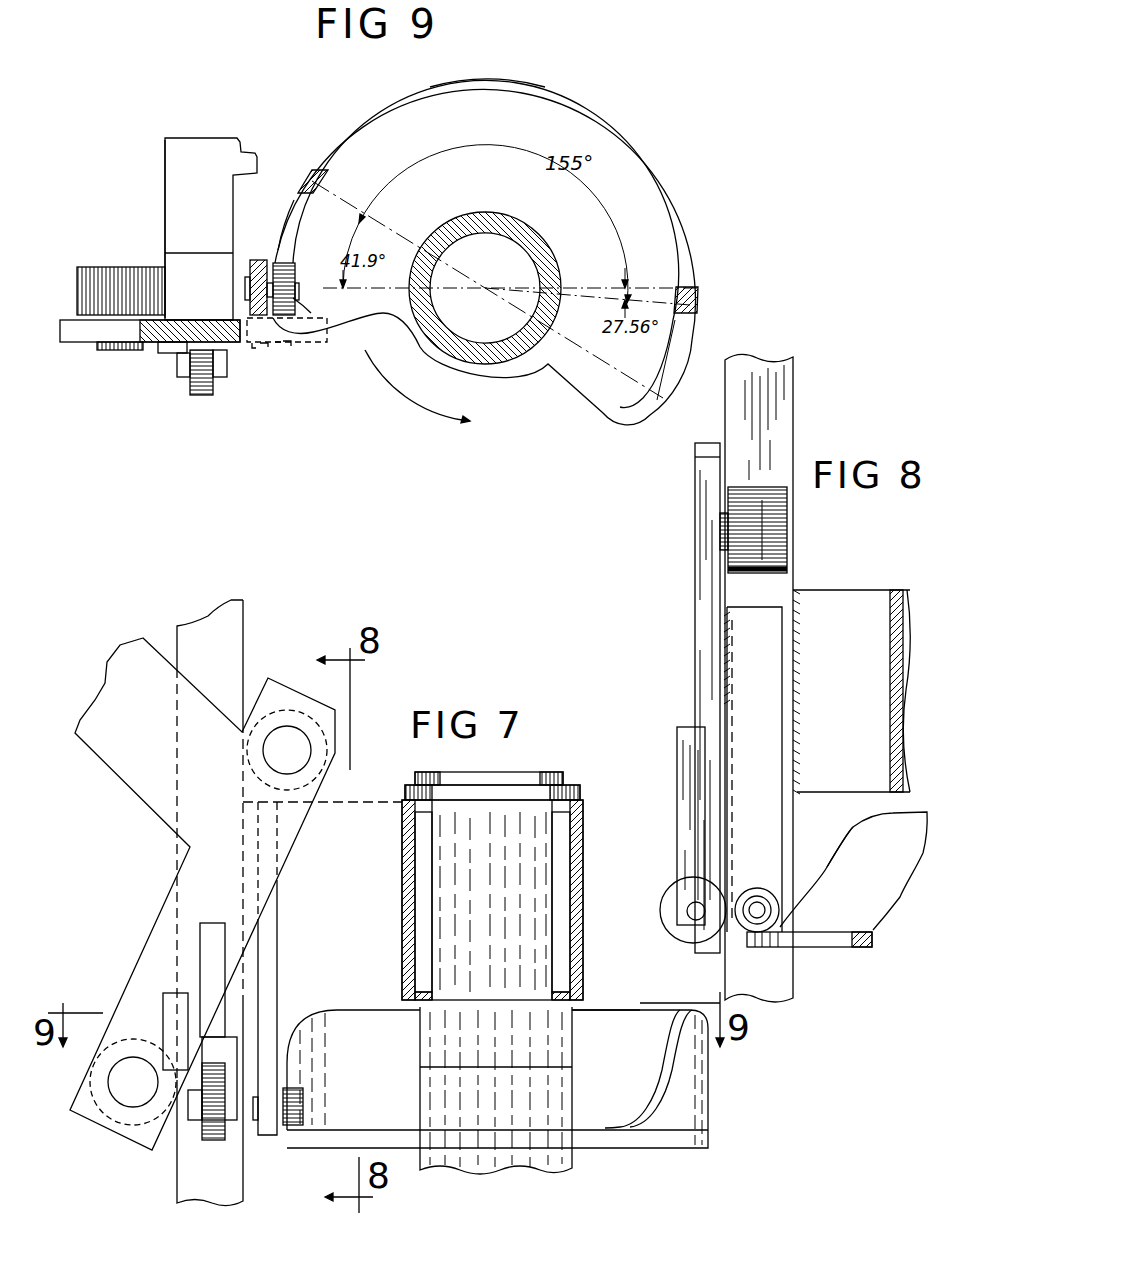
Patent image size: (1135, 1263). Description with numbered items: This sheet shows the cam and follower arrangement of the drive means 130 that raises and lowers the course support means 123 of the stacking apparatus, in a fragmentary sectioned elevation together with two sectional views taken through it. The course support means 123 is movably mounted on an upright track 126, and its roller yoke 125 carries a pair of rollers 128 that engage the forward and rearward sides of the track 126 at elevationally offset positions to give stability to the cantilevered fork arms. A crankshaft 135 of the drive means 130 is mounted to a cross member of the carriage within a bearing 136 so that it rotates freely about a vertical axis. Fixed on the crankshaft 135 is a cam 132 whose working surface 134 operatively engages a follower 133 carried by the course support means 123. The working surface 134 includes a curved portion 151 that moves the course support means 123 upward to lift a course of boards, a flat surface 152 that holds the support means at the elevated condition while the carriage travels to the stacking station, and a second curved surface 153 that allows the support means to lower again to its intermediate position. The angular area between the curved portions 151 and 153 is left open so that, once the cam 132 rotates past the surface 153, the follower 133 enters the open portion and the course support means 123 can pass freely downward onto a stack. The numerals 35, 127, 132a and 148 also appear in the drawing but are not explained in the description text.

In FIG. 9, the hub 35 is at (516, 346).
In FIG. 9, the course support means 123 is at (158, 202).
In FIG. 8, the course support means 123 is at (688, 528).
In FIG. 7, the course support means 123 is at (119, 787).
In FIG. 9, the roller yoke 125 is at (182, 330).
In FIG. 7, the roller yoke 125 is at (176, 904).
In FIG. 9, the upright track 126 is at (202, 270).
In FIG. 8, the upright track 126 is at (775, 430).
In FIG. 7, the upright track 126 is at (216, 644).
In FIG. 8, the housing sleeve 127 is at (890, 672).
In FIG. 7, the housing sleeve 127 is at (583, 848).
In FIG. 9, the roller 128 is at (110, 277).
In FIG. 8, the roller 128 is at (776, 528).
In FIG. 7, the roller 128 is at (328, 784).
In FIG. 9, the drive means 130 is at (690, 211).
In FIG. 7, the drive means 130 is at (715, 1130).
In FIG. 9, the cam 132 is at (589, 409).
In FIG. 7, the cam 132 is at (716, 1061).
In FIG. 8, the cam lobe 132a is at (886, 814).
In FIG. 9, the follower 133 is at (287, 278).
In FIG. 8, the follower 133 is at (779, 906).
In FIG. 7, the follower 133 is at (280, 1152).
In FIG. 9, the working surface 134 is at (607, 128).
In FIG. 8, the working surface 134 is at (864, 831).
In FIG. 7, the working surface 134 is at (618, 1010).
In FIG. 7, the crankshaft 135 is at (455, 912).
In FIG. 7, the bearing 136 is at (574, 788).
In FIG. 9, the lever plate 148 is at (248, 290).
In FIG. 8, the lever plate 148 is at (760, 768).
In FIG. 7, the lever plate 148 is at (265, 980).
In FIG. 9, the curved cam portion 151 is at (288, 218).
In FIG. 9, the flat surface 152 is at (545, 88).
In FIG. 9, the second curved surface 153 is at (673, 362).